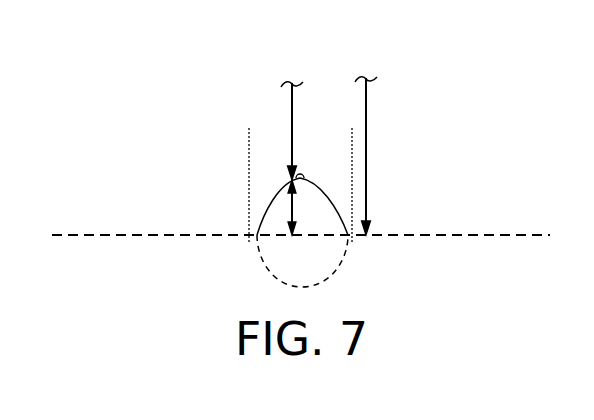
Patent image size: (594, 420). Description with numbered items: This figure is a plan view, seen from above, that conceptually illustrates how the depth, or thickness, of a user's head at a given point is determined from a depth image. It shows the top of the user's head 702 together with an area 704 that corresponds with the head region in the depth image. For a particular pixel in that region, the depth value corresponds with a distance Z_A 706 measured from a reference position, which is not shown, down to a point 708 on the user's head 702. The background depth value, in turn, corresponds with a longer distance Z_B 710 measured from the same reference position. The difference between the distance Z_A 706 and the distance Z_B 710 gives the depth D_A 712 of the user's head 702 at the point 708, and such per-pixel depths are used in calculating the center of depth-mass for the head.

The user's head 702 is at (338, 268).
The area corresponding with the head region 704 is at (248, 137).
The distance Z_A 706 is at (292, 107).
The point on the user's head 708 is at (290, 180).
The distance Z_B 710 is at (366, 100).
The depth D_A of the user's head 712 is at (292, 208).